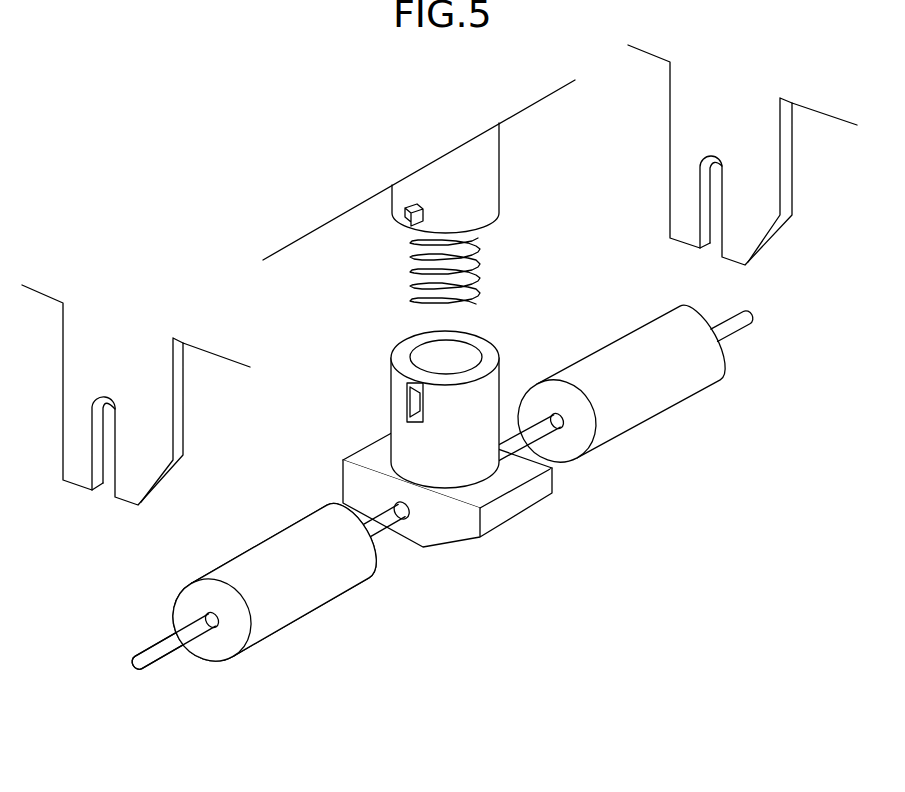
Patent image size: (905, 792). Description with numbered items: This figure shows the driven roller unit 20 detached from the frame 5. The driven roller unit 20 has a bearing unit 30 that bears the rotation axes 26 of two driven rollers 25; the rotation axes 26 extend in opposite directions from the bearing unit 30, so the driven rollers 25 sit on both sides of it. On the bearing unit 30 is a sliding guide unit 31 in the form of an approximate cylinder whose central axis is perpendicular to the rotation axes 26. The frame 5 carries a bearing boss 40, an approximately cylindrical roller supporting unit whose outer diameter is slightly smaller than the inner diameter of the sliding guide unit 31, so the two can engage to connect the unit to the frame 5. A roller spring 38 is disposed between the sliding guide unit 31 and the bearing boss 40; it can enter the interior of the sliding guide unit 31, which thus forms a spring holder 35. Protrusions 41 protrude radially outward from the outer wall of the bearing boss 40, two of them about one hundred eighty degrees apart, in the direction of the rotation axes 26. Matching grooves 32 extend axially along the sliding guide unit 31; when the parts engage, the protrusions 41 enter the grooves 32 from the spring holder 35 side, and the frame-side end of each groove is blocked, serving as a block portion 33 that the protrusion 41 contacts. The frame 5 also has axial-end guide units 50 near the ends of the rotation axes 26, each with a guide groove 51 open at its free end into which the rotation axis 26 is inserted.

The frame 5 is at (308, 235).
The driven roller unit 20 is at (397, 632).
The driven roller 25 is at (655, 412).
The rotation axis 26 is at (735, 320).
The bearing unit 30 is at (467, 538).
The sliding guide unit 31 is at (500, 377).
The groove 32 is at (406, 406).
The block portion 33 is at (408, 398).
The spring holder 35 is at (455, 350).
The roller spring 38 is at (412, 295).
The bearing boss 40 is at (501, 178).
The protrusion 41 is at (398, 220).
The axial-end guide unit 50 is at (767, 247).
The guide groove 51 is at (702, 222).